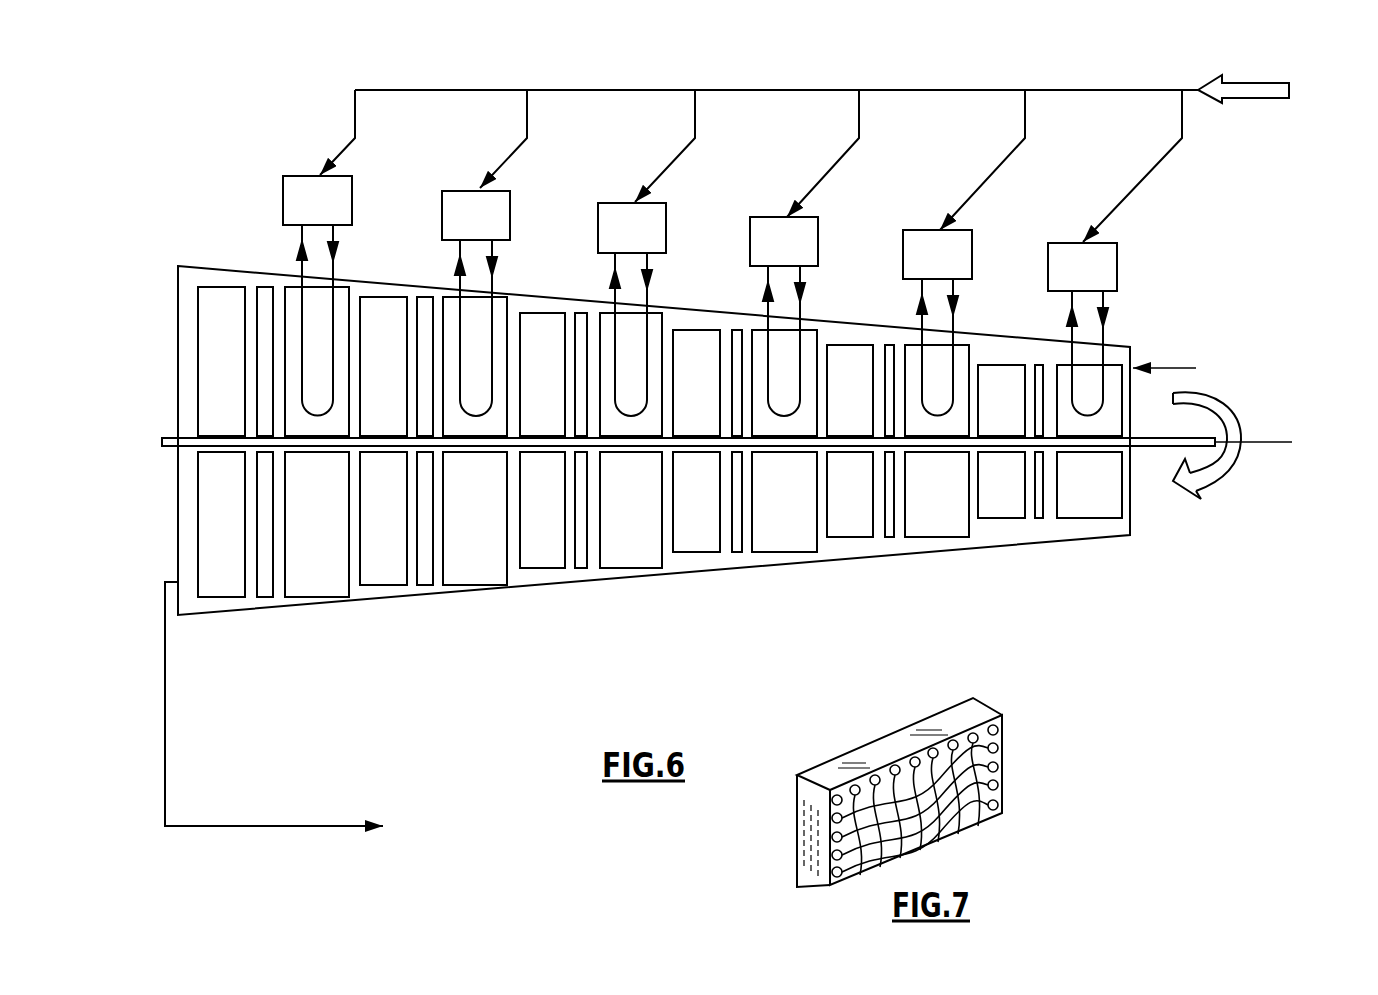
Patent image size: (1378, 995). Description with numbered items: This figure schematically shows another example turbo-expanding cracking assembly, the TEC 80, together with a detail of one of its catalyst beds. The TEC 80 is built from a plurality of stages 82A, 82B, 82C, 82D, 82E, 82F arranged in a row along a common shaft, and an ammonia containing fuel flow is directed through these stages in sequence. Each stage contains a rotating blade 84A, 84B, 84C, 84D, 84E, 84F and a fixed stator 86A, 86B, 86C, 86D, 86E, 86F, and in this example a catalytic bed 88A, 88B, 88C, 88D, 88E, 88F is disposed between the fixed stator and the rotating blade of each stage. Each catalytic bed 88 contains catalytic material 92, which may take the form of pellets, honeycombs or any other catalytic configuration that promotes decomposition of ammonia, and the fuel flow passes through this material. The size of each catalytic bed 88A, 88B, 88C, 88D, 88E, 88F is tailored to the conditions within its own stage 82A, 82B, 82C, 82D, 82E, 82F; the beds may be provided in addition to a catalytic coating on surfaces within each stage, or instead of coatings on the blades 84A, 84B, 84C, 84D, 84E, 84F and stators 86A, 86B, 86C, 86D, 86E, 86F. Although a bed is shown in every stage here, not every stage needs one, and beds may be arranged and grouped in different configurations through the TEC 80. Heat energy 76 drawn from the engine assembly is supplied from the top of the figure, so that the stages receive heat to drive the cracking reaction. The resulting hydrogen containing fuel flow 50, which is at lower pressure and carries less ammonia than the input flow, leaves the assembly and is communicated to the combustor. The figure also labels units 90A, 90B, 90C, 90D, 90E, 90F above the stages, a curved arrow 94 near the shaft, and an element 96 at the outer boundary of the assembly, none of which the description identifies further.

In FIG. 6, the hydrogen containing fuel flow 50 is at (261, 829).
In FIG. 6, the heat energy 76 is at (1255, 101).
In FIG. 6, the turbo-expanding cracking assembly 80 is at (1199, 232).
In FIG. 6, the stage 82A is at (1122, 612).
In FIG. 6, the stage 82B is at (970, 630).
In FIG. 6, the stage 82C is at (815, 643).
In FIG. 6, the stage 82D is at (663, 659).
In FIG. 6, the stage 82E is at (507, 676).
In FIG. 6, the stage 82F is at (349, 693).
In FIG. 6, the rotating blade 84A is at (1010, 508).
In FIG. 6, the rotating blade 84B is at (858, 528).
In FIG. 6, the rotating blade 84C is at (705, 543).
In FIG. 6, the rotating blade 84D is at (549, 559).
In FIG. 6, the rotating blade 84E is at (385, 574).
In FIG. 6, the rotating blade 84F is at (228, 587).
In FIG. 6, the fixed stator 86A is at (1102, 506).
In FIG. 6, the fixed stator 86B is at (951, 520).
In FIG. 6, the fixed stator 86C is at (798, 536).
In FIG. 6, the fixed stator 86D is at (642, 554).
In FIG. 6, the fixed stator 86E is at (482, 571).
In FIG. 6, the fixed stator 86F is at (321, 583).
In FIG. 6, the catalytic bed 88A is at (1040, 511).
In FIG. 6, the catalytic bed 88B is at (891, 529).
In FIG. 6, the catalytic bed 88C is at (735, 543).
In FIG. 6, the catalytic bed 88D is at (581, 561).
In FIG. 6, the catalytic bed 88E is at (426, 577).
In FIG. 6, the catalytic bed 88F is at (263, 587).
In FIG. 7, the catalytic bed 88 is at (1007, 759).
In FIG. 6, the sensor unit 90A is at (1104, 282).
In FIG. 6, the sensor unit 90B is at (959, 269).
In FIG. 6, the sensor unit 90C is at (806, 256).
In FIG. 6, the sensor unit 90D is at (654, 242).
In FIG. 6, the sensor unit 90E is at (498, 230).
In FIG. 6, the sensor unit 90F is at (339, 215).
In FIG. 7, the catalytic material 92 is at (926, 809).
In FIG. 6, the rotation direction 94 is at (1165, 448).
In FIG. 6, the casing 96 is at (1130, 345).